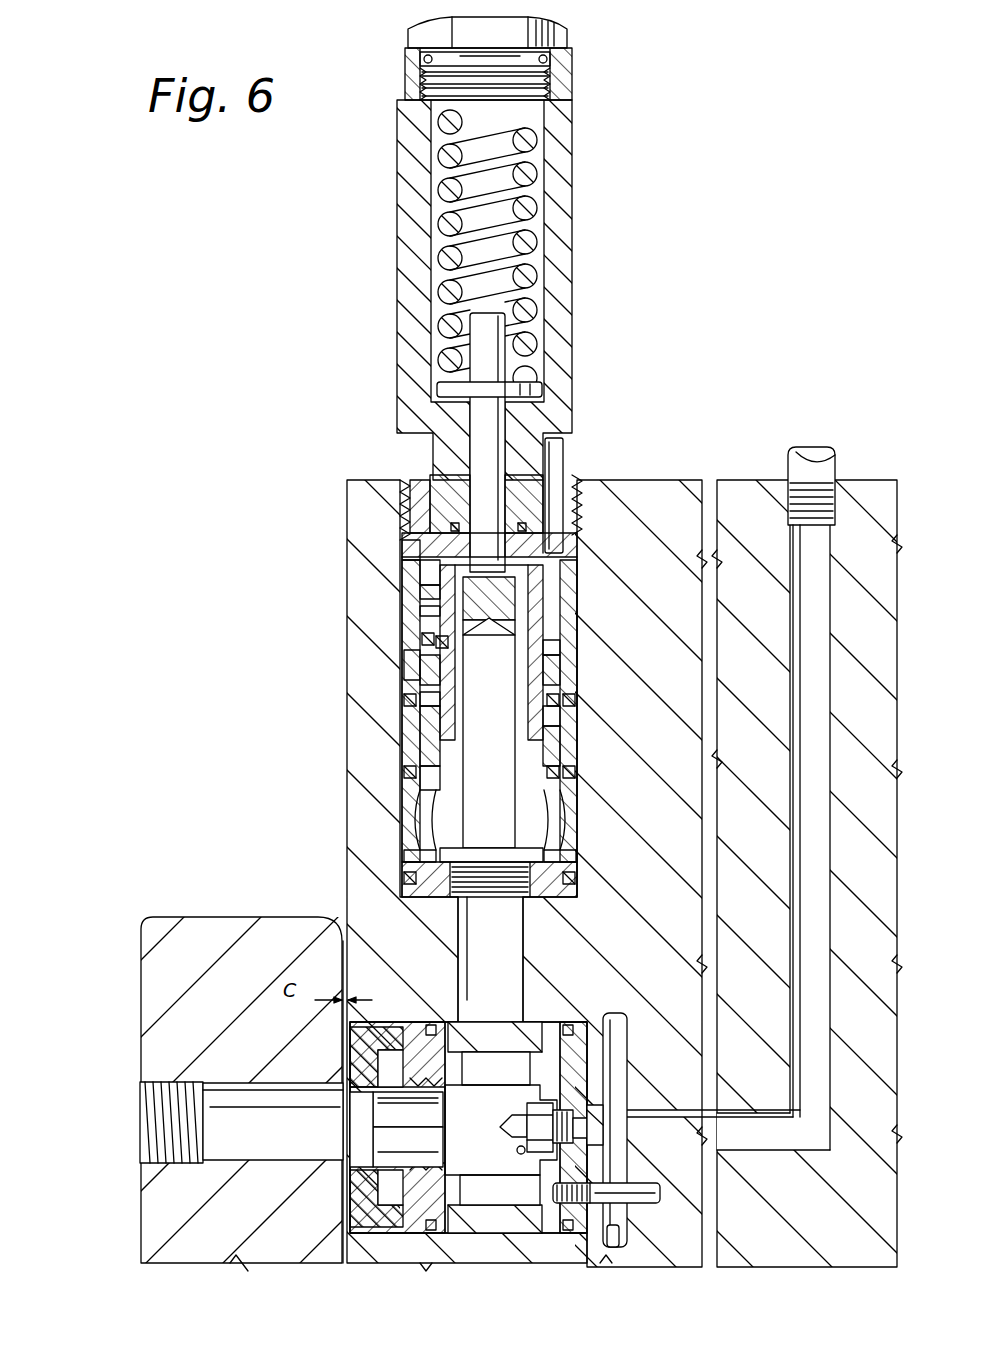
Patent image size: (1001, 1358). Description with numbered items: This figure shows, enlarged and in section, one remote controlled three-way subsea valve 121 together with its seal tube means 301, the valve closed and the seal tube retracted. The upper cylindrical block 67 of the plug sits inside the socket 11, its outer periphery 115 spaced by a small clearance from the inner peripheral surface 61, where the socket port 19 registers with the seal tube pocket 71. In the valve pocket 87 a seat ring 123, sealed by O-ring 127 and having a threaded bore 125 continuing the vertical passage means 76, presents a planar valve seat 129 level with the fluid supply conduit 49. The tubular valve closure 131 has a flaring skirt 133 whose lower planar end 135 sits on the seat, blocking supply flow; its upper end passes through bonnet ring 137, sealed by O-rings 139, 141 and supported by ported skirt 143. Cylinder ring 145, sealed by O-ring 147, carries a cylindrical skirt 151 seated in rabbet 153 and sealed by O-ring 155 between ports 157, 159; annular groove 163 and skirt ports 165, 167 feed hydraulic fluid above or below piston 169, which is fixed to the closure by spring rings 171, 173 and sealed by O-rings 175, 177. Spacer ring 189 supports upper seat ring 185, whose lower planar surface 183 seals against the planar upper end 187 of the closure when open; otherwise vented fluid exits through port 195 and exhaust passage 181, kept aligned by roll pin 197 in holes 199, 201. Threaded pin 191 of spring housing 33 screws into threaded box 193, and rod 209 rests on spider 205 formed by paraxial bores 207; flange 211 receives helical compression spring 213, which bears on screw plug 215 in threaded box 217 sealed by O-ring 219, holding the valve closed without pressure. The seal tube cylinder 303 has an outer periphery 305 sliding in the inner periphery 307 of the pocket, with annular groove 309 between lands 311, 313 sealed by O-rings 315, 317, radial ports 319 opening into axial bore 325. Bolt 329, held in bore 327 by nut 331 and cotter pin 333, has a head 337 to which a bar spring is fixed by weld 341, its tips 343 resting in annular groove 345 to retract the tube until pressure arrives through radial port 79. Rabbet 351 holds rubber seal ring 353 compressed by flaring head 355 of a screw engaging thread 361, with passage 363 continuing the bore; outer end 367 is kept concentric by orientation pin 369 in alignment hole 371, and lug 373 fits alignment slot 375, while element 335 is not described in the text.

The socket 11 is at (200, 935).
The socket port 19 is at (245, 1140).
The spring housing 33 is at (560, 290).
The fluid supply conduit 49 is at (420, 780).
The inner peripheral surface 61 is at (342, 962).
The upper cylindrical block 67 is at (365, 876).
The seal tube pocket 71 is at (345, 1233).
The vertical passage means 76 is at (508, 958).
The radial port 79 is at (645, 1110).
The valve pocket 87 is at (578, 640).
The outer periphery 115 is at (335, 930).
The remote controlled three-way subsea valve 121 is at (597, 455).
The seat ring 123 is at (560, 868).
The threaded bore 125 is at (480, 960).
The O-ring 127 is at (575, 880).
The valve seat 129 is at (450, 905).
The tubular valve closure 131 is at (560, 748).
The skirt 133 is at (556, 842).
The lower planar end 135 is at (420, 828).
The bonnet ring 137 is at (404, 772).
The O-ring 139 is at (565, 775).
The O-ring 141 is at (420, 740).
The ported skirt 143 is at (404, 856).
The cylinder ring 145 is at (422, 638).
The O-ring 147 is at (420, 612).
The cylindrical skirt 151 is at (420, 672).
The rabbet 153 is at (420, 700).
The O-ring 155 is at (560, 650).
The port 157 is at (404, 665).
The port 159 is at (404, 700).
The annular groove 163 is at (560, 702).
The skirt port 165 is at (436, 642).
The skirt port 167 is at (560, 718).
The piston 169 is at (560, 668).
The spring ring 171 is at (462, 680).
The spring ring 173 is at (489, 733).
The O-ring 175 is at (460, 700).
The O-ring 177 is at (460, 722).
The exhaust passage 181 is at (410, 505).
The lower planar surface 183 is at (548, 565).
The upper seat ring 185 is at (555, 540).
The planar upper end 187 is at (420, 572).
The spacer ring 189 is at (420, 592).
The threaded pin 191 is at (582, 500).
The threaded box 193 is at (402, 490).
The port 195 is at (404, 550).
The roll pin 197 is at (563, 452).
The hole 199 is at (580, 478).
The hole 201 is at (530, 530).
The spider 205 is at (516, 595).
The paraxial bore 207 is at (545, 605).
The rod 209 is at (485, 455).
The flange 211 is at (535, 372).
The helical compression spring 213 is at (530, 242).
The screw plug 215 is at (545, 75).
The threaded box 217 is at (545, 96).
The O-ring 219 is at (550, 59).
The seal tube means 301 is at (495, 1235).
The cylinder 303 is at (343, 1008).
The cylindric outer periphery 305 is at (550, 1235).
The cylindric inner periphery 307 is at (568, 1233).
The annular groove 309 is at (455, 1010).
The cylindrical land 311 is at (450, 1025).
The cylindrical land 313 is at (548, 1020).
The O-ring 315 is at (445, 995).
The O-ring 317 is at (568, 1022).
The radial port 319 is at (545, 1050).
The axial bore 325 is at (500, 1111).
The axial bore 327 is at (535, 1075).
The bolt 329 is at (582, 1130).
The nut 331 is at (516, 1150).
The cotter pin 333 is at (505, 1140).
The lever plate 335 is at (612, 1015).
The head 337 is at (540, 1190).
The weld or solder 341 is at (615, 1103).
The spring tip 343 is at (660, 1250).
The annular groove 345 is at (760, 1262).
The rabbet 351 is at (350, 1040).
The rubber seal ring 353 is at (350, 1160).
The flaring head 355 is at (350, 1082).
The thread 361 is at (408, 1109).
The passage 363 is at (408, 1147).
The outer end 367 is at (350, 1195).
The orientation pin 369 is at (622, 1240).
The alignment hole 371 is at (640, 1185).
The alignment lug 373 is at (372, 1233).
The alignment slot 375 is at (400, 1233).